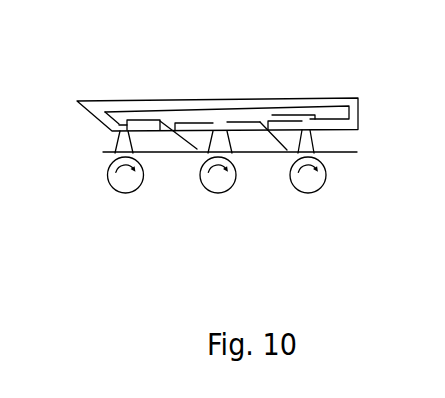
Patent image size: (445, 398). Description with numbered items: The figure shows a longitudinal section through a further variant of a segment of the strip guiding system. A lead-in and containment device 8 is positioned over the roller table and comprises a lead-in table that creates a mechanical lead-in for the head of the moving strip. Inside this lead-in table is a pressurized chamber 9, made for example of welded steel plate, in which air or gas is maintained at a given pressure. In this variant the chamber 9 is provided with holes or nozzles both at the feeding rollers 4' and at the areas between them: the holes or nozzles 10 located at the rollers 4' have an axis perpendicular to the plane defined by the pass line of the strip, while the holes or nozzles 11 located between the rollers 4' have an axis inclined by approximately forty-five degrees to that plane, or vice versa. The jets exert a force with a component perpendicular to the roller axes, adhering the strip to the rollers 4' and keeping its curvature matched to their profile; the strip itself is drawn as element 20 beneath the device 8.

The lead-in and containment device 8 is at (119, 124).
The pressurized chamber 9 is at (250, 110).
The inclined holes or nozzles 11 is at (170, 152).
The perpendicular holes or nozzles 10 is at (305, 120).
The web 20 is at (337, 152).
The feeding rollers 4' is at (194, 210).